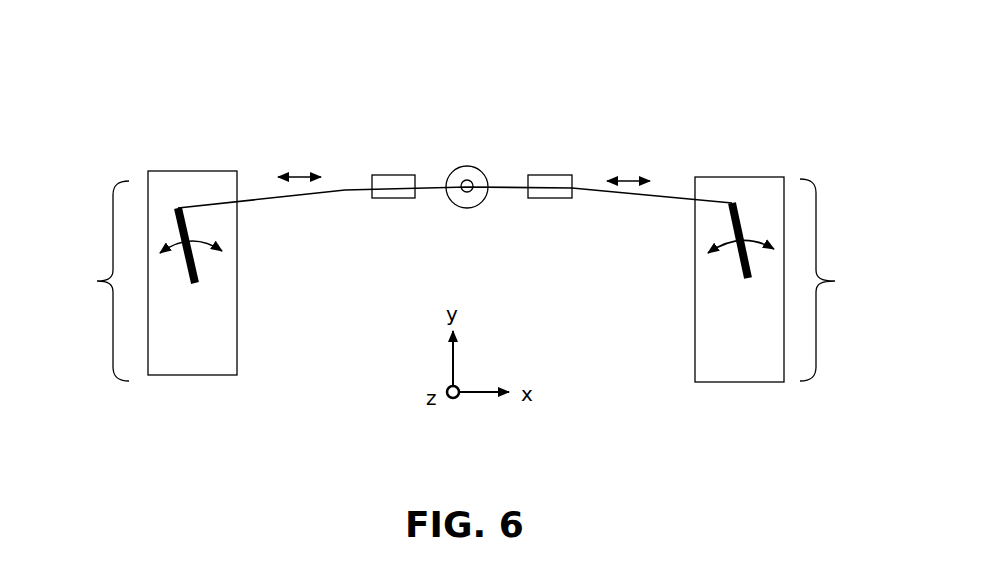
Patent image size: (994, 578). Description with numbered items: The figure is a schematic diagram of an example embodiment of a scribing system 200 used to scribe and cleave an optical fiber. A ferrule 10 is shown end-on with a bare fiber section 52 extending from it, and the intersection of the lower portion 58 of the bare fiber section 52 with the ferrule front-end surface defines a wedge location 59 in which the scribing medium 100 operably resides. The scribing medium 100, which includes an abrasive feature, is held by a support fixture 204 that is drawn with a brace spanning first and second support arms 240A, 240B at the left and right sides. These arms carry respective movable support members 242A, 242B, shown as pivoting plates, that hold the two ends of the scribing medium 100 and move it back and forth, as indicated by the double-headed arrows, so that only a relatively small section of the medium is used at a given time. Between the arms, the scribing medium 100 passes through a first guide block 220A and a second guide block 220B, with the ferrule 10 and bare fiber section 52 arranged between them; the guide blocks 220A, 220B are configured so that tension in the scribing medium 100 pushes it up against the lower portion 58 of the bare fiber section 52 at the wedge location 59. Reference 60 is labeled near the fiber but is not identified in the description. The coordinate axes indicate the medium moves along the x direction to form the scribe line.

The scribing system 200 is at (176, 81).
The support fixture 204 is at (440, 280).
The first support arm 240A is at (223, 344).
The second support arm 240B is at (770, 344).
The movable support member 242A is at (198, 267).
The movable support member 242B is at (730, 223).
The scribing medium 100 is at (347, 192).
The first guide block 220A is at (398, 175).
The second guide block 220B is at (553, 174).
The bare fiber section 52 is at (449, 167).
The ferrule 10 is at (472, 167).
The wedge location 59 is at (479, 189).
The lower portion 58 is at (462, 207).
The second component 60 is at (473, 207).